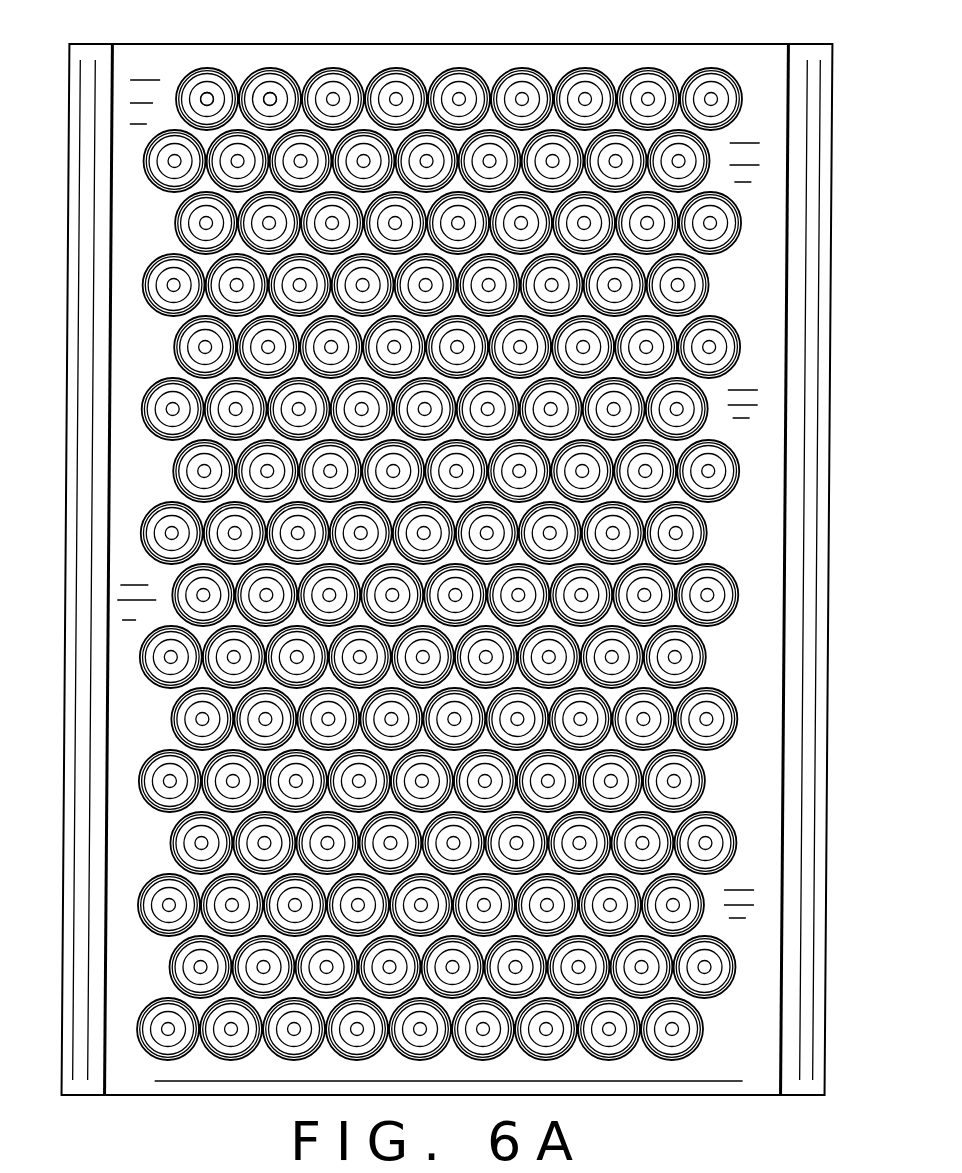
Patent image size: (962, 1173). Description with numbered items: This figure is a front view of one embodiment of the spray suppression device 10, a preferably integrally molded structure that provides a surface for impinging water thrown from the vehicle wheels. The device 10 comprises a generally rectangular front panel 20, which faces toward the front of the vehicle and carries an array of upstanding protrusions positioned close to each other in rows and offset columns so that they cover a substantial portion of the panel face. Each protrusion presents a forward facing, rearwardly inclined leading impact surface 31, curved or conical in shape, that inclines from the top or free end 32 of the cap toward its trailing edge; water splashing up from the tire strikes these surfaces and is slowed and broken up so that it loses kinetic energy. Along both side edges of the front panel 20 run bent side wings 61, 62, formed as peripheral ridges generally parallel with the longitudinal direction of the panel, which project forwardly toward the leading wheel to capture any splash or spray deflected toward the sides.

The spray suppression device 10 is at (772, 29).
The front panel 20 is at (770, 62).
The leading impact surface 31 is at (393, 67).
The free end of the cap 32 is at (270, 97).
The side wing 61 is at (808, 641).
The side wing 62 is at (83, 612).